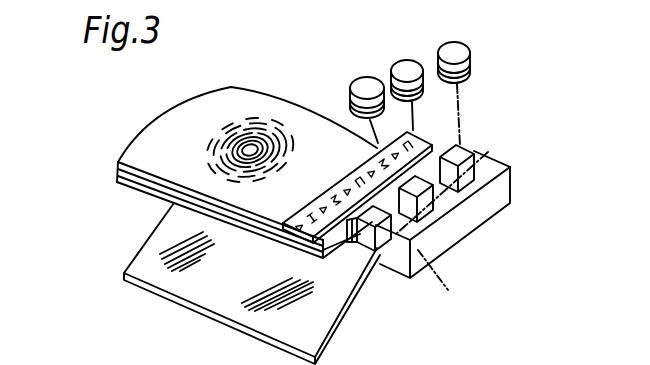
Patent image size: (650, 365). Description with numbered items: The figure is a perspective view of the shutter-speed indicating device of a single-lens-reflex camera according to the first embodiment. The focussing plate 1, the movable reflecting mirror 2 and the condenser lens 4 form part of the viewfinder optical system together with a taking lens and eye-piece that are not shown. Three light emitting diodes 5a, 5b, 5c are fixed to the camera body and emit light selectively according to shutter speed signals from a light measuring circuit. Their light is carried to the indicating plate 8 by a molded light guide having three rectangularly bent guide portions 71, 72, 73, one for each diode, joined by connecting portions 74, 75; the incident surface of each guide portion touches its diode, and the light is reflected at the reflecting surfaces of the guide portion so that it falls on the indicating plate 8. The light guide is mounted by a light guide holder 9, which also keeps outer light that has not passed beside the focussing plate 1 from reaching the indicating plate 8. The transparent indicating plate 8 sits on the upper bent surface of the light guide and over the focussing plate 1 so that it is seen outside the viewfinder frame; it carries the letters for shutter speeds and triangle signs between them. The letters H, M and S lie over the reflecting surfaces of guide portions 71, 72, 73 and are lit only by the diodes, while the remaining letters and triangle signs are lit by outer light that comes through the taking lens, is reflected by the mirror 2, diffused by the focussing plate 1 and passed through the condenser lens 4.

The focussing plate 1 is at (99, 202).
The movable reflecting mirror 2 is at (148, 255).
The condenser lens 4 is at (168, 134).
The light emitting diode 5a is at (368, 96).
The light emitting diode 5b is at (409, 78).
The light emitting diode 5c is at (454, 61).
The indicating plate 8 is at (331, 189).
The light guide holder 9 is at (442, 283).
The guide portion 71 is at (418, 247).
The guide portion 72 is at (440, 213).
The guide portion 73 is at (486, 182).
The connecting portion 74 is at (420, 225).
The connecting portion 75 is at (445, 205).